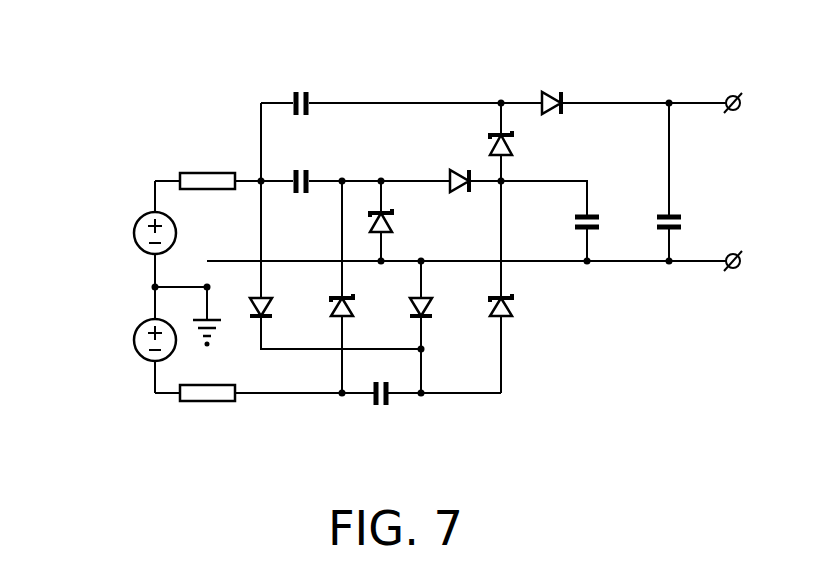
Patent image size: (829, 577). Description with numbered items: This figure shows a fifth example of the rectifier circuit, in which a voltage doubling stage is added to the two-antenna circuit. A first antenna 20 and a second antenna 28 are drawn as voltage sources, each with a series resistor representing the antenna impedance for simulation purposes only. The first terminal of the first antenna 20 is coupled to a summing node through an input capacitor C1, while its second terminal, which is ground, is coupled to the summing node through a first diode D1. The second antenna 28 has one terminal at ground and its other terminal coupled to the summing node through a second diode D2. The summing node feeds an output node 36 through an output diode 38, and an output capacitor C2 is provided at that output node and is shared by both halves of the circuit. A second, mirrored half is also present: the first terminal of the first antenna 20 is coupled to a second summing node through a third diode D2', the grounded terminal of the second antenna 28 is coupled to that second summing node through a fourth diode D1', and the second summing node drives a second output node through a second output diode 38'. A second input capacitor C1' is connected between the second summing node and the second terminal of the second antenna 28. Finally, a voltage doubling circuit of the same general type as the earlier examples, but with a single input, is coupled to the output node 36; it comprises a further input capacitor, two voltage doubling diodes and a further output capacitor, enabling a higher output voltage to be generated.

The first antenna 20 is at (133, 235).
The second antenna 28 is at (133, 341).
The output node 36 is at (509, 173).
The output diode 38 is at (457, 209).
The second output diode 38' is at (532, 305).
The input capacitor C1 is at (300, 167).
The second input capacitor C1' is at (382, 408).
The output capacitor C2 is at (604, 223).
The first diode D1 is at (397, 221).
The fourth diode D1' is at (438, 308).
The second diode D2 is at (357, 306).
The third diode D2' is at (279, 308).